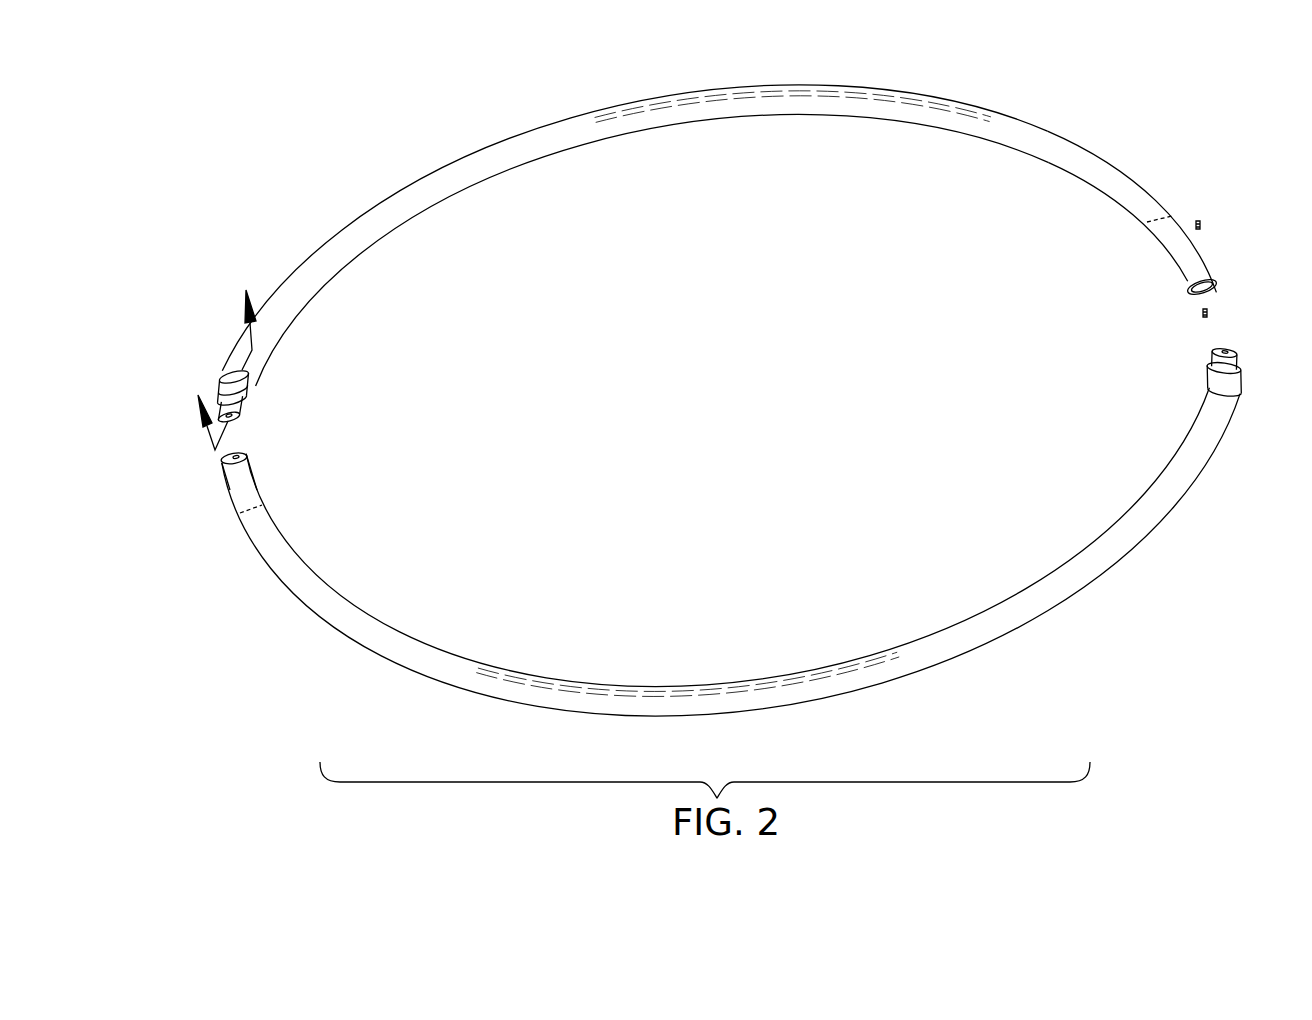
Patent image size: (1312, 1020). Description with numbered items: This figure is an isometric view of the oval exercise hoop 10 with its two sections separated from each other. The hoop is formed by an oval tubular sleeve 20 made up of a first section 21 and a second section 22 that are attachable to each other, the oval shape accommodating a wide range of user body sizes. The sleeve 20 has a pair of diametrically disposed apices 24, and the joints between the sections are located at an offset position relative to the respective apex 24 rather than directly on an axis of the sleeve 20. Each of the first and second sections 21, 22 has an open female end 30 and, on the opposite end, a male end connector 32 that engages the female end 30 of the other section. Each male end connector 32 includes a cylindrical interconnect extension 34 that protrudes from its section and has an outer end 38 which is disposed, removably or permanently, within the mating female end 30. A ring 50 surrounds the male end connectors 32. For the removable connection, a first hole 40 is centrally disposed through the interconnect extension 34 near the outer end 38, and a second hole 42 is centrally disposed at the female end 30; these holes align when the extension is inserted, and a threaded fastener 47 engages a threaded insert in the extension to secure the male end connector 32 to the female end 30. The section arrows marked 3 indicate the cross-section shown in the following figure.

The oval exercise hoop 10 is at (262, 205).
The oval tubular sleeve 20 is at (388, 196).
The first section 21 is at (1100, 172).
The second section 22 is at (1227, 411).
The apices 24 is at (1163, 217).
The open female end 30 is at (1228, 293).
The male end connector 32 is at (1238, 353).
The cylindrical interconnect extension 34 is at (247, 415).
The outer end 38 is at (230, 420).
The first hole 40 is at (221, 387).
The second hole 42 is at (221, 466).
The threaded fastener 47 is at (1206, 222).
The ring 50 is at (221, 381).
The section line for FIG. 3 is at (218, 370).